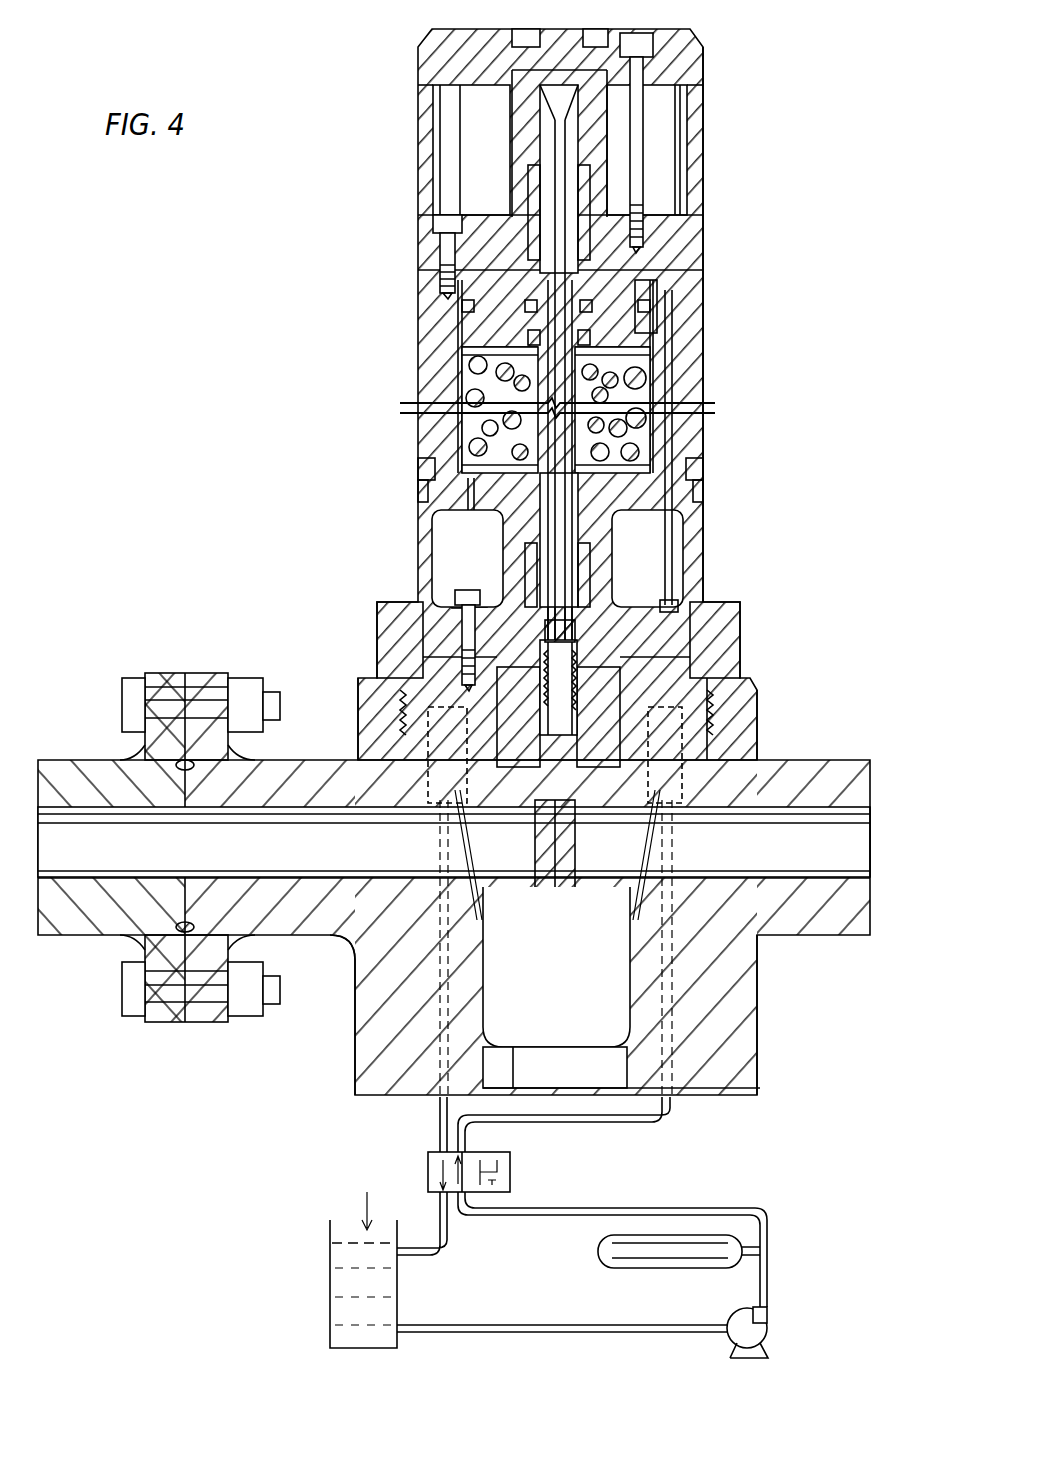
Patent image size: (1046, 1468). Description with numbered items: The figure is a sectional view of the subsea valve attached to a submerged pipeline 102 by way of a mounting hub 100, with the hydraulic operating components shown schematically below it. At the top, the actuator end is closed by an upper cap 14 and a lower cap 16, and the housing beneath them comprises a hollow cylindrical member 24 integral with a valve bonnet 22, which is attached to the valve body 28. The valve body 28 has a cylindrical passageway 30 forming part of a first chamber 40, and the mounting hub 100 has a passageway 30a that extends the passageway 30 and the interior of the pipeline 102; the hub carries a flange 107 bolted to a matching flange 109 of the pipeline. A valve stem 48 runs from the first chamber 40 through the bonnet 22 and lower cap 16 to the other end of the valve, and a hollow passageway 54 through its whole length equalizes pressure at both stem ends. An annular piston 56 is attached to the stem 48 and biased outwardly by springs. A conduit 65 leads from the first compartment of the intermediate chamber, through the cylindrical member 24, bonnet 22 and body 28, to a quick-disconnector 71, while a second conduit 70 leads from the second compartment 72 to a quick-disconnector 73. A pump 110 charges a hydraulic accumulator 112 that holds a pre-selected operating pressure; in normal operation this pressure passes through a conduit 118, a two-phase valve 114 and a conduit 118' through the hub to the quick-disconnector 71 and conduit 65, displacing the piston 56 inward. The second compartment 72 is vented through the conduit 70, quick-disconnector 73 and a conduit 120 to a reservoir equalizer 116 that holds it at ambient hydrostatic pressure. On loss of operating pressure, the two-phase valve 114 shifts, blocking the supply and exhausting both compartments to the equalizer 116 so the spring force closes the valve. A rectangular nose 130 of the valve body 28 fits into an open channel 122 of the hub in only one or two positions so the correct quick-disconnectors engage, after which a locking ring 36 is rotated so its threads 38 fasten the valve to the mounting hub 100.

The upper cap 14 is at (430, 58).
The lower cap 16 is at (420, 250).
The valve bonnet 22 is at (420, 595).
The hollow cylindrical member 24 is at (700, 324).
The valve body 28 is at (660, 665).
The cylindrical passageway 30 is at (515, 855).
The passageway 30a is at (850, 855).
The locking ring 36 is at (380, 628).
The threads 38 is at (730, 695).
The first chamber 40 is at (650, 780).
The valve stem 48 is at (595, 582).
The hollow passageway 54 is at (555, 432).
The annular piston 56 is at (480, 330).
The conduit 65 is at (675, 450).
The second conduit 70 is at (455, 545).
The quick-disconnector 71 is at (700, 730).
The second compartment 72 is at (650, 392).
The quick-disconnector 73 is at (420, 725).
The mounting hub 100 is at (370, 1030).
The pipeline 102 is at (65, 765).
The flange 107 is at (208, 1020).
The matching flange 109 is at (160, 1020).
The pump 110 is at (770, 1336).
The hydraulic accumulator 112 is at (620, 1262).
The two-phase valve 114 is at (510, 1172).
The reservoir equalizer 116 is at (345, 1260).
The conduit 118 is at (612, 1240).
The conduit 118' is at (590, 1124).
The conduit 120 is at (440, 1112).
The open channel 122 is at (600, 1070).
The nose 130 is at (600, 1015).